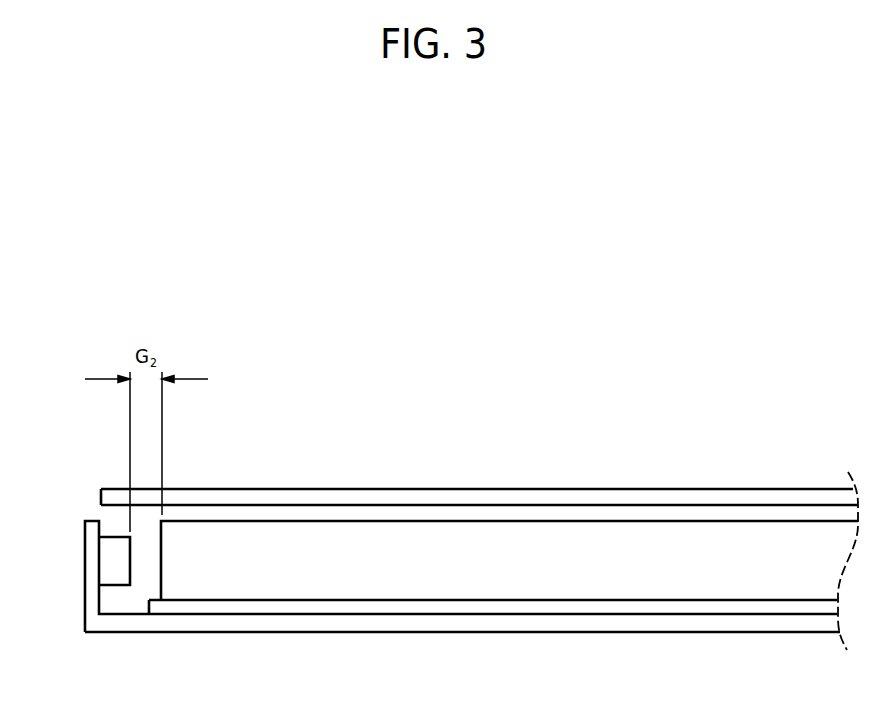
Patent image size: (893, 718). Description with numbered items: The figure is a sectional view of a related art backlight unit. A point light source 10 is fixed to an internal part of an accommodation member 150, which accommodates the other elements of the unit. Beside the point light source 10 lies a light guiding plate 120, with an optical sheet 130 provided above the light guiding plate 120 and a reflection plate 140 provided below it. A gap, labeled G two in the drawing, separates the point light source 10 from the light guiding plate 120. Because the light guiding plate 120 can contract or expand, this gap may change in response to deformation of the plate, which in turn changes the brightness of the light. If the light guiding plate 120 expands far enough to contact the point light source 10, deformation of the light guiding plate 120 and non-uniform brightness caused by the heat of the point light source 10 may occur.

The point light source 10 is at (112, 561).
The light guiding plate 120 is at (397, 580).
The optical sheet 130 is at (516, 489).
The reflection plate 140 is at (607, 607).
The accommodation member 150 is at (197, 624).